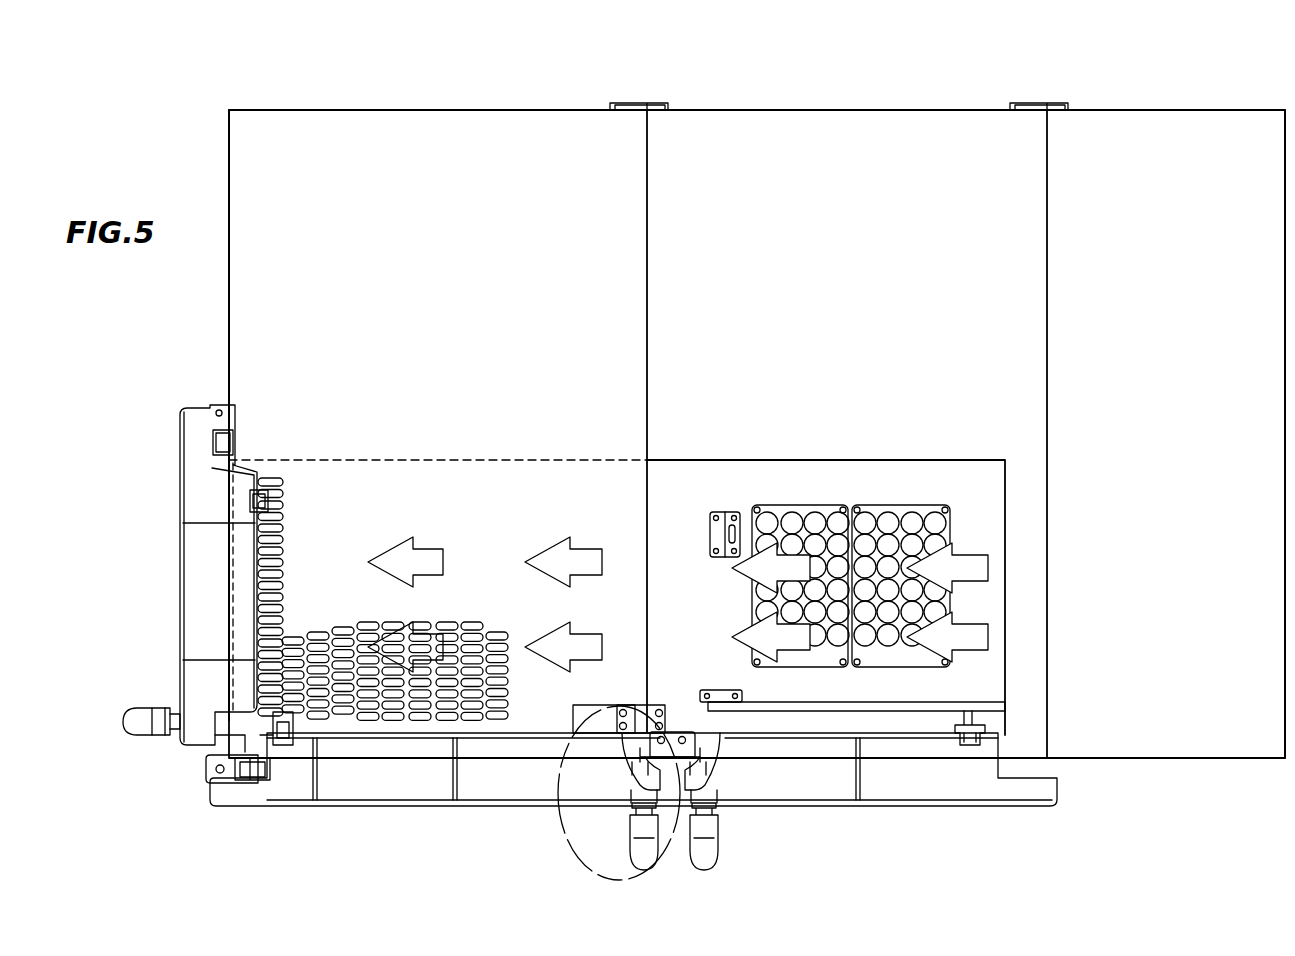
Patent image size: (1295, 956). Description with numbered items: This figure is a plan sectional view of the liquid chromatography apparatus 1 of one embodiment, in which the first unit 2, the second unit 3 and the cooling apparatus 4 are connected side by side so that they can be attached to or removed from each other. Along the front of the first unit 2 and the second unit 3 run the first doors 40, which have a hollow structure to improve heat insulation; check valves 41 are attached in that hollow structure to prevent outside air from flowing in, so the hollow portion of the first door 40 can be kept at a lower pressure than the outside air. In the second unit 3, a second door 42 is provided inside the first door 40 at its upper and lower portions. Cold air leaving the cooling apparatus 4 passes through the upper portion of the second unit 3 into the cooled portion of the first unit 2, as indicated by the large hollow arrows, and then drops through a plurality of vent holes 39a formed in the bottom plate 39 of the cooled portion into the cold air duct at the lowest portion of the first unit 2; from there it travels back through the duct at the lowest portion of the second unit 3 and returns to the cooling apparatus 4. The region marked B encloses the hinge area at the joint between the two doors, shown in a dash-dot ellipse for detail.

The liquid chromatography apparatus 1 is at (170, 122).
The first unit 2 is at (536, 80).
The second unit 3 is at (978, 80).
The cooling apparatus 4 is at (1248, 80).
The bottom plate 39 is at (527, 700).
The vent holes 39a is at (345, 713).
The first door 40 is at (363, 812).
The check valve 41 is at (283, 748).
The second door 42 is at (957, 702).
The hinge portion B is at (579, 852).